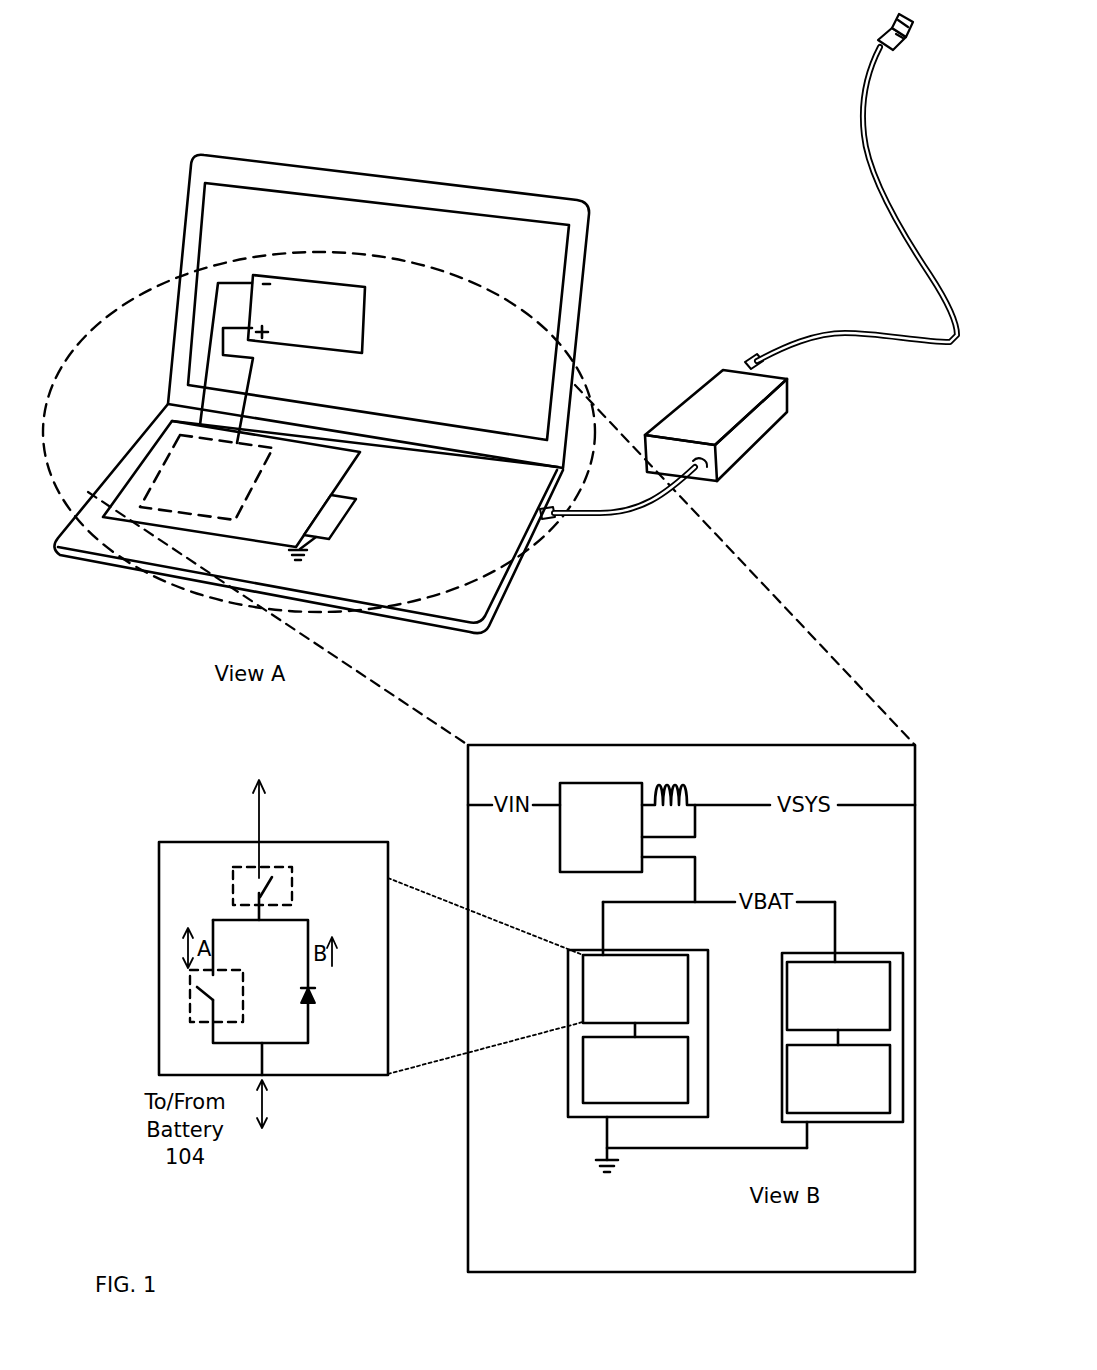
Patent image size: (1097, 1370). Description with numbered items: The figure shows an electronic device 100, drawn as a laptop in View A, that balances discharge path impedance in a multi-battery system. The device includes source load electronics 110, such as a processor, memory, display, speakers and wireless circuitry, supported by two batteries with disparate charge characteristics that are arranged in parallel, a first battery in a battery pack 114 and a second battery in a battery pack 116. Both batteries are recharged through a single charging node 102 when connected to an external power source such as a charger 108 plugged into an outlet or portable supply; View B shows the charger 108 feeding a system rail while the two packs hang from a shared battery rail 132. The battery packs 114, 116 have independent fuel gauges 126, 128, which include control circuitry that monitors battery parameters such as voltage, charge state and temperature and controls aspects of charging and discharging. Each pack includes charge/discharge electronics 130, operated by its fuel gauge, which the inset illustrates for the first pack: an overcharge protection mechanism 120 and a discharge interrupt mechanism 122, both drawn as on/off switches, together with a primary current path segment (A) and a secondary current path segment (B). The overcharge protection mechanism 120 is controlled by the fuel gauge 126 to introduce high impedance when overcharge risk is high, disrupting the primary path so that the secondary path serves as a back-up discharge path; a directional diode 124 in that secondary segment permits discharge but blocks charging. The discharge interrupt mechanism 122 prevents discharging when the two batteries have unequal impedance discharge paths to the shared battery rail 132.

The electronic device 100 is at (184, 80).
The charging node 102 is at (548, 521).
The charger 108 is at (697, 419).
The source load electronics 110 is at (187, 490).
The battery pack 114 is at (593, 1115).
The battery pack 116 is at (858, 1125).
The overcharge protection mechanism 120 is at (190, 973).
The discharge interrupt mechanism 122 is at (232, 885).
The directional diode 124 is at (313, 989).
The fuel gauge 126 is at (583, 988).
The fuel gauge 128 is at (817, 965).
The charge/discharge electronics 130 is at (767, 745).
The shared battery rail 132 is at (860, 872).